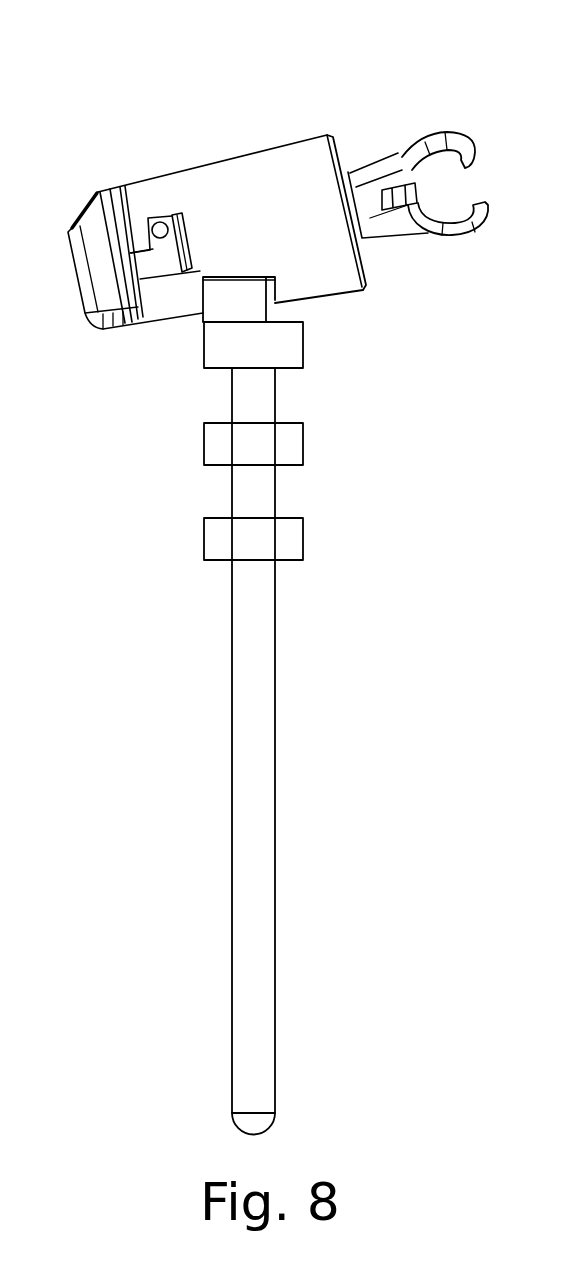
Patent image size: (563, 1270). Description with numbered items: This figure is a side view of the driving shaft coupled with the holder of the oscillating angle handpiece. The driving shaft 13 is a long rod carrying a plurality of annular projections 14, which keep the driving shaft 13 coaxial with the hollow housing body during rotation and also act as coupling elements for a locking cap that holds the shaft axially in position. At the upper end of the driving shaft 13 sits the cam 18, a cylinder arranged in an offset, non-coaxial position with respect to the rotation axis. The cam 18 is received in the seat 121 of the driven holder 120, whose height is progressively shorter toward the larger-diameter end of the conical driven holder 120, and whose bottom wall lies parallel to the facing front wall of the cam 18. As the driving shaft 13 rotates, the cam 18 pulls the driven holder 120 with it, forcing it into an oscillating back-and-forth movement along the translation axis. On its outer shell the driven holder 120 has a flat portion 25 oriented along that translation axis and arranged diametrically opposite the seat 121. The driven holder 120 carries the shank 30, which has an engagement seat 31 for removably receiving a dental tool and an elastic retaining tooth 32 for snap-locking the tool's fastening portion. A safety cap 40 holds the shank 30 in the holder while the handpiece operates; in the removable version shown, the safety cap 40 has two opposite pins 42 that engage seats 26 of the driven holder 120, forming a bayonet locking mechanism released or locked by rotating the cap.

The driving shaft 13 is at (275, 828).
The annular projections 14 is at (303, 343).
The cam 18 is at (220, 303).
The flat portion 25 is at (281, 144).
The seats 26 is at (180, 213).
The shank 30 is at (347, 170).
The engagement seat 31 is at (467, 170).
The elastic retaining tooth 32 is at (396, 172).
The safety cap 40 is at (62, 206).
The pins 42 is at (168, 243).
The driven holder 120 is at (240, 165).
The seat for the cam 121 is at (267, 281).